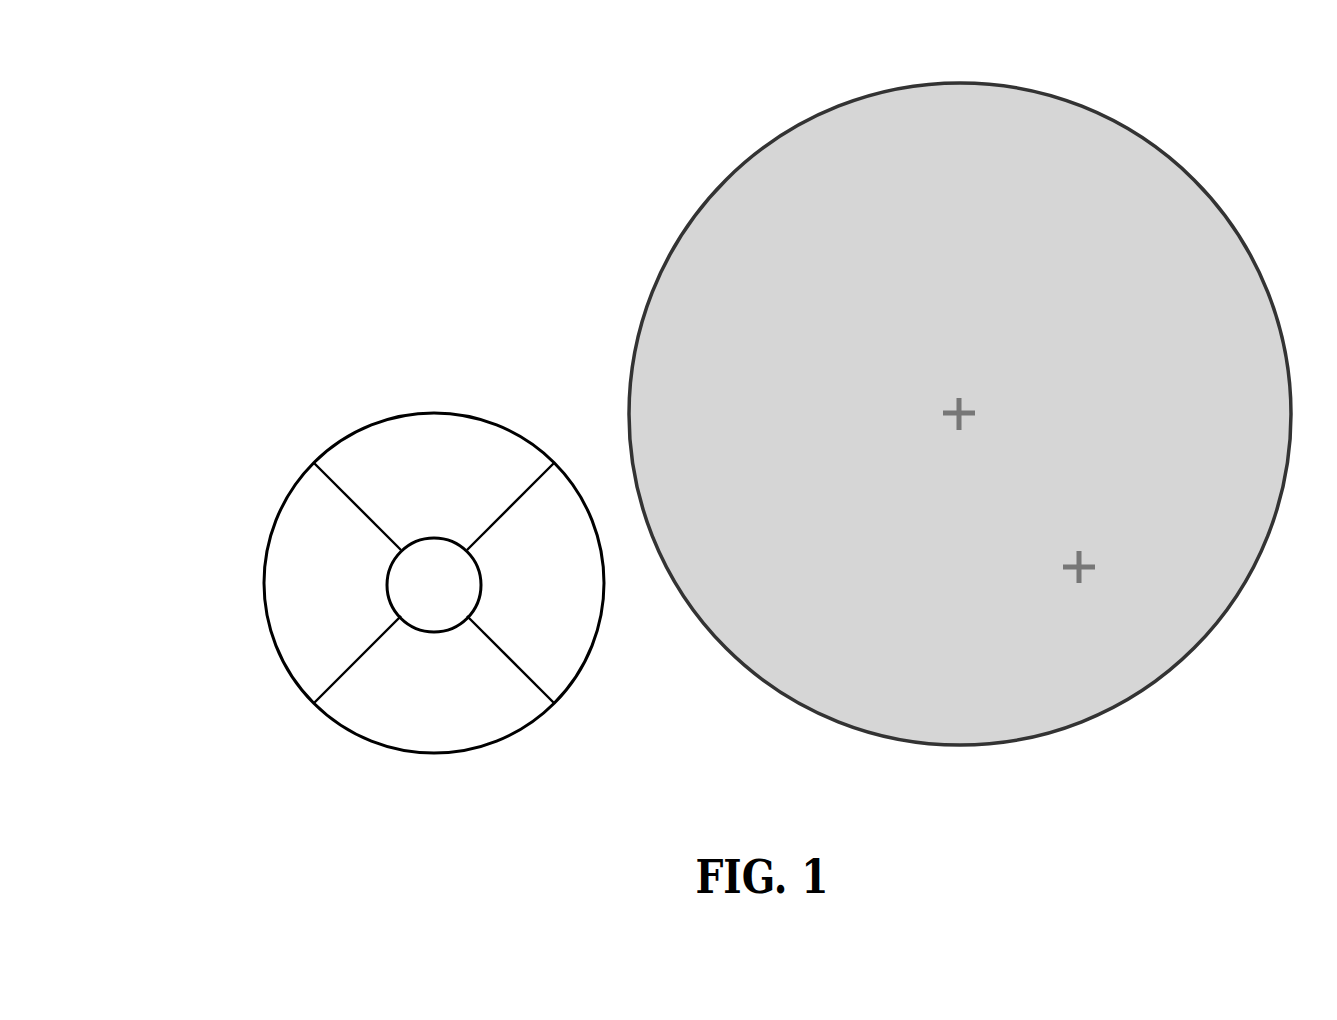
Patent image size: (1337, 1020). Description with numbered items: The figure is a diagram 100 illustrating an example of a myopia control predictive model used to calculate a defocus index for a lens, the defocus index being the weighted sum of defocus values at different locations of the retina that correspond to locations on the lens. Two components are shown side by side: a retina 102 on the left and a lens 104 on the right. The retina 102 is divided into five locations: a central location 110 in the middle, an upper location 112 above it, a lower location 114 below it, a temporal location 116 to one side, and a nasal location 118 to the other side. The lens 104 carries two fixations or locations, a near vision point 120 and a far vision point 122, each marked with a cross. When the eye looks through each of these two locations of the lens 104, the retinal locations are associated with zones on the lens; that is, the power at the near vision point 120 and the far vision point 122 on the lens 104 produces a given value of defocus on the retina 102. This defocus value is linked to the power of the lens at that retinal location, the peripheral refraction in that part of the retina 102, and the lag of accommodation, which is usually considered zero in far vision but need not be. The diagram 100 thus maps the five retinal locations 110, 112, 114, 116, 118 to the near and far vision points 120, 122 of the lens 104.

The diagram 100 is at (210, 67).
The retina 102 is at (485, 416).
The lens 104 is at (1192, 180).
The central location 110 is at (416, 620).
The upper location 112 is at (418, 523).
The lower location 114 is at (416, 737).
The temporal location 116 is at (309, 625).
The nasal location 118 is at (528, 620).
The near vision point 120 is at (1087, 572).
The far vision point 122 is at (969, 418).